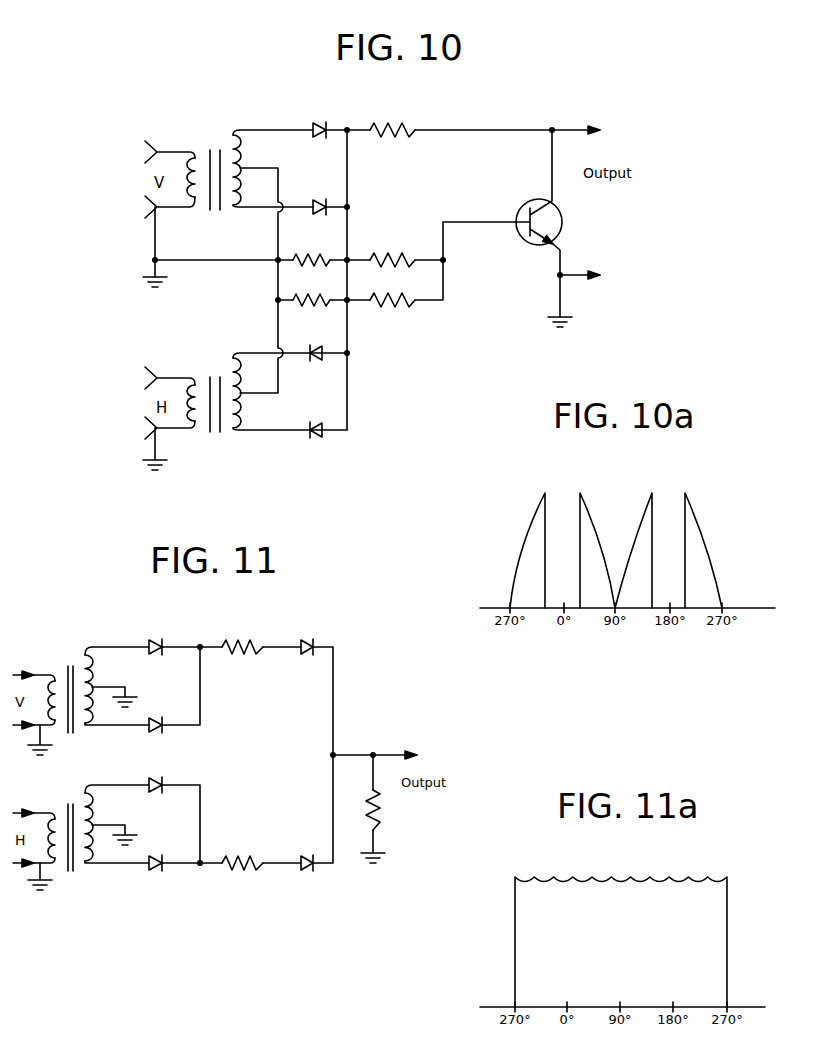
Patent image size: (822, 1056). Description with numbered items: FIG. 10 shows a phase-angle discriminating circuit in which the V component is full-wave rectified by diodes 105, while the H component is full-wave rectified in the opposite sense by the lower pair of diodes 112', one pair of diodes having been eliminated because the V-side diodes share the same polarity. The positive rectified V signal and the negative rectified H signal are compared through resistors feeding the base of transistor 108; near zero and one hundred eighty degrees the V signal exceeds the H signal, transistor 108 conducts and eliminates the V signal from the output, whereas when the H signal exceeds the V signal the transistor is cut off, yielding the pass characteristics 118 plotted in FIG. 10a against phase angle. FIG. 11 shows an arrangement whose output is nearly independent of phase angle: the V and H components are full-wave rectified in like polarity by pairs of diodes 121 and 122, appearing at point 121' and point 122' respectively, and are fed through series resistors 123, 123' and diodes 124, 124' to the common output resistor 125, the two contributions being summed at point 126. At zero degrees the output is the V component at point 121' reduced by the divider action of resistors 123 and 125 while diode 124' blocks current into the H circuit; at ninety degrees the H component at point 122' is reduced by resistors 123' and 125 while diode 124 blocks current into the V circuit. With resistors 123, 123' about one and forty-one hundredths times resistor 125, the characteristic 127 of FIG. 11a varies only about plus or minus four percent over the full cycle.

In FIG. 10, the diodes 105 is at (319, 142).
In FIG. 10, the transistor 108 is at (526, 203).
In FIG. 10, the diodes (horizontal channel rectifier) 112' is at (314, 391).
In FIG. 10A, the pass characteristics 118 is at (525, 536).
In FIG. 11, the diodes 121 is at (163, 686).
In FIG. 11, the point 121' is at (192, 664).
In FIG. 11, the diodes 122 is at (163, 824).
In FIG. 11, the point 122' is at (192, 848).
In FIG. 11, the series resistor 123 is at (245, 664).
In FIG. 11, the series resistor 123' is at (245, 840).
In FIG. 11, the diode 124 is at (318, 630).
In FIG. 11, the diode 124' is at (318, 883).
In FIG. 11, the common output resistor 125 is at (386, 812).
In FIG. 11, the point 126 is at (336, 753).
In FIG. 11A, the characteristic 127 is at (597, 878).